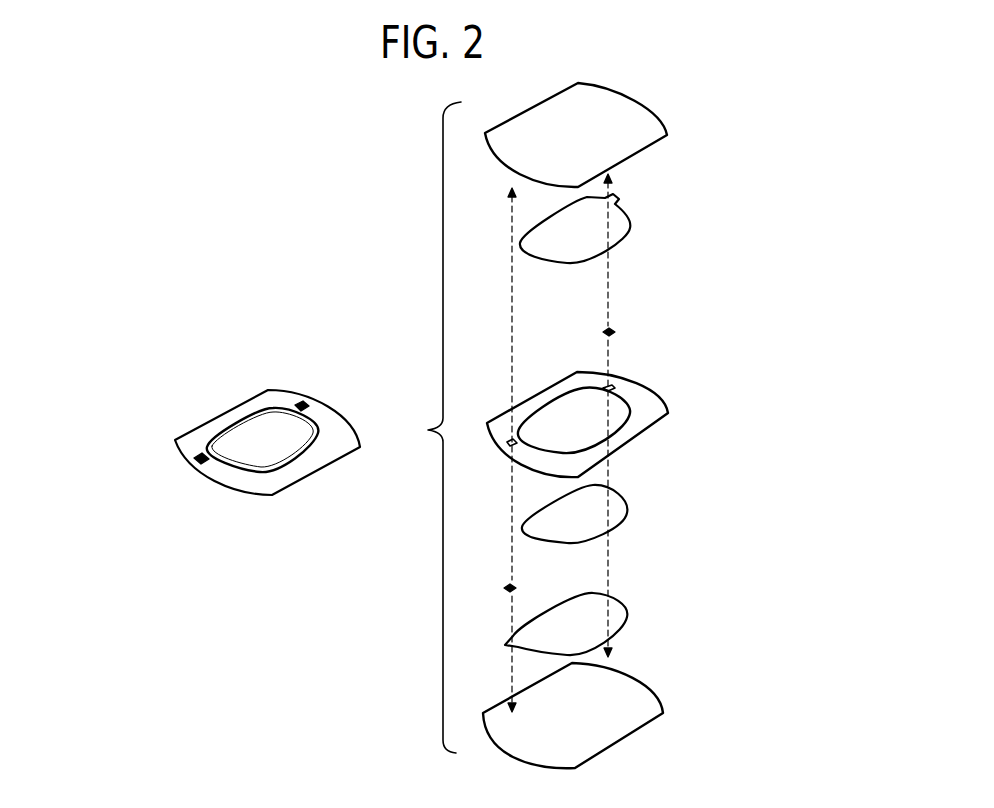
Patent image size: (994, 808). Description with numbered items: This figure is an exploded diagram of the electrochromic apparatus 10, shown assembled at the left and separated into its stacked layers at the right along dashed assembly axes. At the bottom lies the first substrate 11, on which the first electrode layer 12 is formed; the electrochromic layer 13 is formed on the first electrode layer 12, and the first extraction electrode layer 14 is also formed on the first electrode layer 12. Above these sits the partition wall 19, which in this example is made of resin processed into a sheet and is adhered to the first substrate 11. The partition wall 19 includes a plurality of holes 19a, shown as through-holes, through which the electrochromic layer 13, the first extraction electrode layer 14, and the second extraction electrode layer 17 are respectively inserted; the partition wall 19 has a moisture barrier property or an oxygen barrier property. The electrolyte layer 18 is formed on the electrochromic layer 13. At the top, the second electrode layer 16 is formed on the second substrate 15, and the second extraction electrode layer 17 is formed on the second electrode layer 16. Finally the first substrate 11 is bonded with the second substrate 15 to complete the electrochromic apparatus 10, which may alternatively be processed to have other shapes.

The electrochromic apparatus 10 is at (308, 370).
The first substrate 11 is at (637, 687).
The first electrode layer 12 is at (615, 613).
The electrochromic layer 13 is at (600, 509).
The electrolyte layer 18 is at (619, 510).
The first extraction electrode layer 14 is at (515, 587).
The second substrate 15 is at (643, 106).
The second electrode layer 16 is at (628, 220).
The second extraction electrode layer 17 is at (615, 331).
The partition wall 19 is at (578, 412).
The holes 19a is at (548, 417).